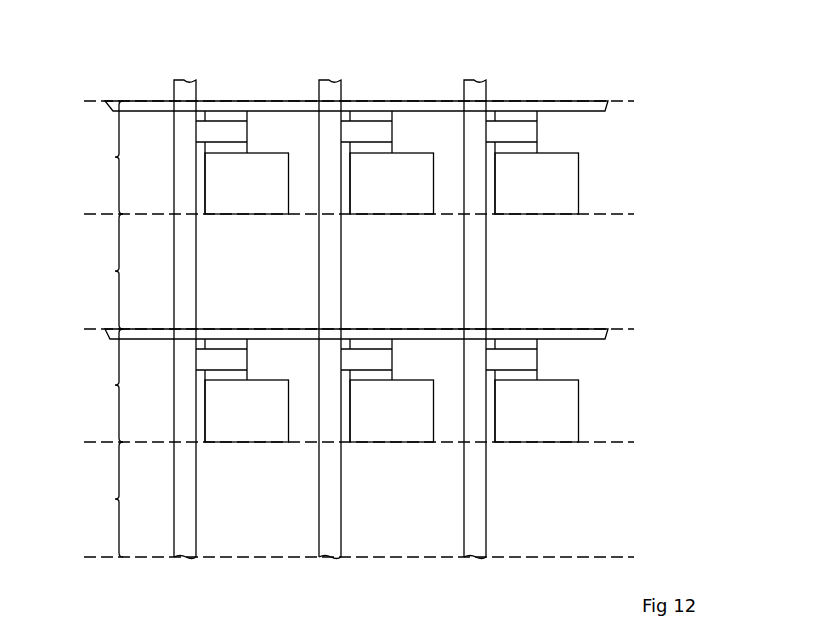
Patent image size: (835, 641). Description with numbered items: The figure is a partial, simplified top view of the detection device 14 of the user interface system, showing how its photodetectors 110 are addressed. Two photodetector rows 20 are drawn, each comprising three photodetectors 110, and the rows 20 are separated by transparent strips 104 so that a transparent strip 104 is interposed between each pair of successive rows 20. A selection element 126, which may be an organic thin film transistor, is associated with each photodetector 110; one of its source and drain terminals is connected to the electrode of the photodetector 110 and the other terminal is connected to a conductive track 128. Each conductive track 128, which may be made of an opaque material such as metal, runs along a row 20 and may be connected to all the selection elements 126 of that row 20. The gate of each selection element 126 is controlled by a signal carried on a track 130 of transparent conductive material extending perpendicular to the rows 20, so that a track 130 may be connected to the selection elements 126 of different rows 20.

The detection device 14 is at (560, 34).
The photodetector row 20 is at (105, 271).
The transparent strip 104 is at (101, 385).
The photodetector 110 is at (252, 168).
The selection element 126 is at (247, 118).
The conductive track 128 is at (145, 109).
The track 130 is at (192, 90).